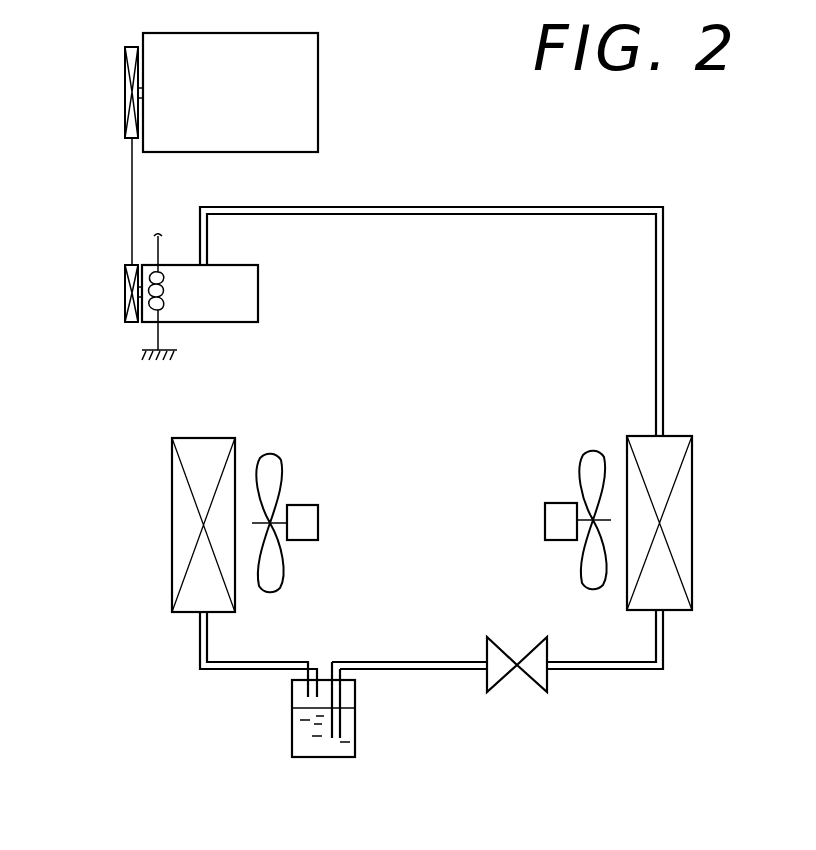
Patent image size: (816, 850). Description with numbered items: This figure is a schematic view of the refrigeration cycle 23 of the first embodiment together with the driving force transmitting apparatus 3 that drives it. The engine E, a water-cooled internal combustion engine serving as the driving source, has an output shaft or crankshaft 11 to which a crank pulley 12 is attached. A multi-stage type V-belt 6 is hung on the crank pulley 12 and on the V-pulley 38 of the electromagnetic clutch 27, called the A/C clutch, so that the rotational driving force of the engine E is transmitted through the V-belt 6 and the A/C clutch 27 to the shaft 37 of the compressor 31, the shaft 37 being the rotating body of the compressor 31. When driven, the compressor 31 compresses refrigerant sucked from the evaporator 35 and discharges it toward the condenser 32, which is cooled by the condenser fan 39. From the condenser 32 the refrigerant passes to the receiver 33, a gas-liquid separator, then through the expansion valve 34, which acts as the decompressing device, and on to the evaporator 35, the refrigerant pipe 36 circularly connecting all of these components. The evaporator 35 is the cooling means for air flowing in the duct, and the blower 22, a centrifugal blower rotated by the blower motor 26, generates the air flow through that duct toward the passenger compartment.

The engine E is at (318, 38).
The crank pulley 12 is at (125, 56).
The output shaft (crankshaft) 11 is at (125, 92).
The multi-stage type V-belt 6 is at (130, 200).
The driving force transmitting apparatus 3 is at (187, 289).
The V-pulley 38 is at (125, 278).
The shaft 37 is at (125, 300).
The compressor 31 is at (258, 292).
The electromagnetic clutch (A/C clutch) 27 is at (166, 280).
The refrigerant pipe 36 is at (574, 207).
The refrigerant circuit 23 is at (678, 190).
The condenser 32 is at (172, 472).
The condenser fan 39 is at (270, 455).
The evaporator 35 is at (692, 458).
The blower 22 is at (591, 453).
The blower motor 26 is at (558, 503).
The receiver 33 is at (292, 722).
The expansion valve 34 is at (512, 680).